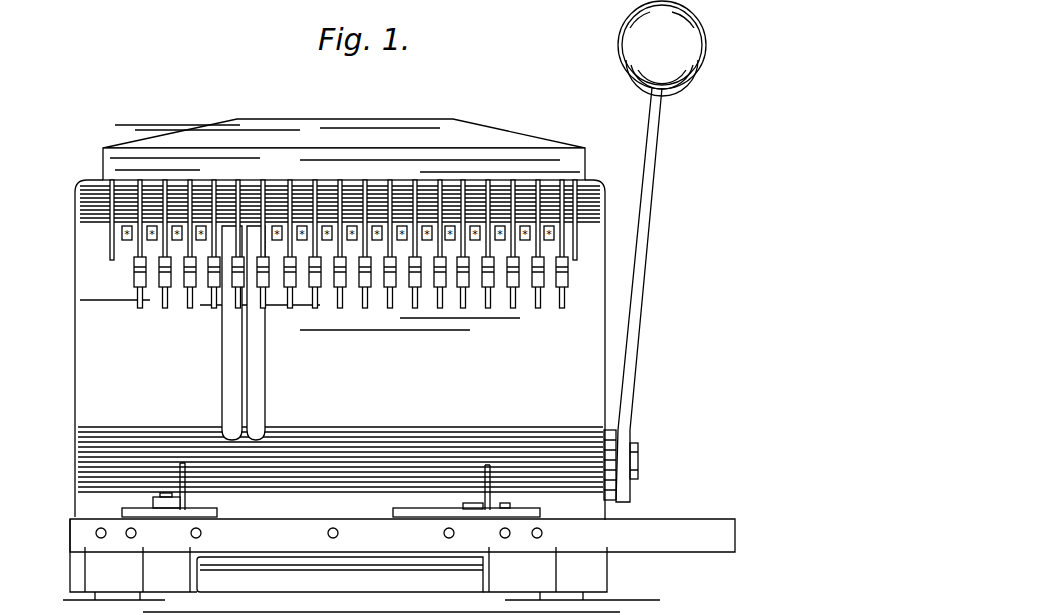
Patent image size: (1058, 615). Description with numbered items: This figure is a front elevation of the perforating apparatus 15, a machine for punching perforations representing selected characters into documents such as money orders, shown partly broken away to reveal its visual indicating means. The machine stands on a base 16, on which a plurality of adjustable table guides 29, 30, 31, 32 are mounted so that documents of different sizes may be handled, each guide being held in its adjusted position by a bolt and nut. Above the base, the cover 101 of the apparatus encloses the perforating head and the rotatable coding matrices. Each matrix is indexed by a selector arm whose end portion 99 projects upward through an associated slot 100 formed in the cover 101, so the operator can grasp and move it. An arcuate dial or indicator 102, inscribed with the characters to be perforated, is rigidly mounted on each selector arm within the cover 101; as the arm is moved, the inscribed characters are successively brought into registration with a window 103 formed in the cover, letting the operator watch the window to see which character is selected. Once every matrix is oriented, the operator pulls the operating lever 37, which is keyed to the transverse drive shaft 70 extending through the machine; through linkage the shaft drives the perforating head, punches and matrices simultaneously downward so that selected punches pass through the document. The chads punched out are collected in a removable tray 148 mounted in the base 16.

The perforating apparatus 15 is at (529, 111).
The operating lever 37 is at (700, 74).
The window 103 is at (176, 227).
The slot 100 is at (380, 197).
The cover 101 is at (80, 310).
The end portions 99 is at (312, 290).
The arcuate dial or indicator 102 is at (262, 371).
The transverse drive shaft 70 is at (613, 460).
The adjustable table guide 29 is at (177, 490).
The adjustable table guide 32 is at (218, 511).
The adjustable table guide 30 is at (486, 478).
The adjustable table guide 31 is at (541, 513).
The base 16 is at (685, 520).
The removable tray 148 is at (283, 573).